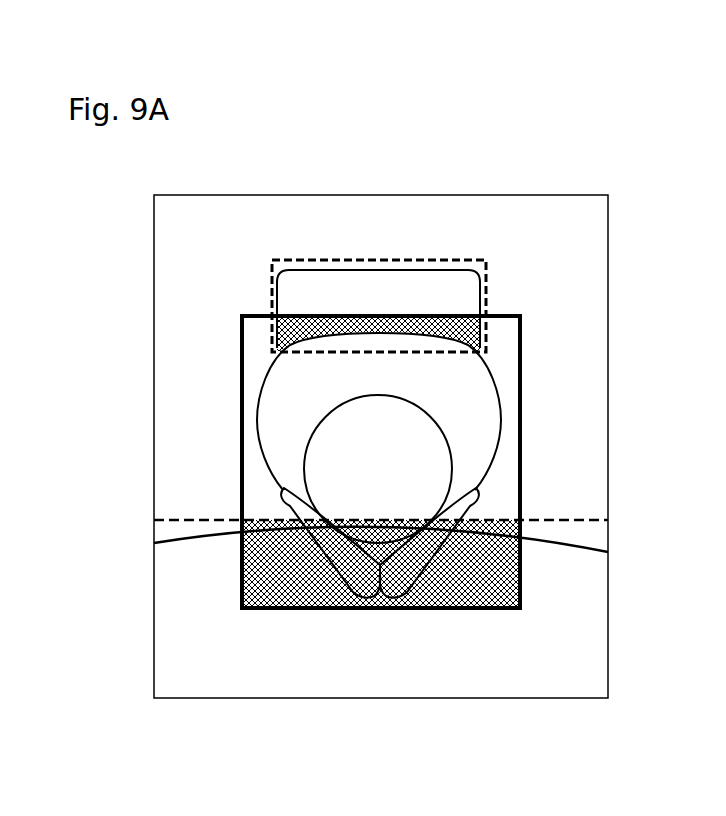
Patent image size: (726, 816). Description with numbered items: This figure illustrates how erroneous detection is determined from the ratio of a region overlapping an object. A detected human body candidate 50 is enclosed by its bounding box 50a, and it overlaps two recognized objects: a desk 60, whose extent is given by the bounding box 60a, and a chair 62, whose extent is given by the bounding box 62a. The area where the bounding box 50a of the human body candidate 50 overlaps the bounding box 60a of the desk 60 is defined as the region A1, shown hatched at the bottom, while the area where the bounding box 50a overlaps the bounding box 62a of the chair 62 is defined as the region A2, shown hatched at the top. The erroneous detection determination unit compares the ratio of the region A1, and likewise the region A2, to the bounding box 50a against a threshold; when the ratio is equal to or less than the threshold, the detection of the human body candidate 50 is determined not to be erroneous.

The human body candidate 50 is at (478, 447).
The bounding box of human body candidate 50a is at (521, 370).
The desk 60 is at (580, 623).
The bounding box of desk 60a is at (573, 519).
The chair 62 is at (305, 279).
The bounding box of chair 62a is at (372, 259).
The region A1 is at (312, 600).
The region A2 is at (297, 327).